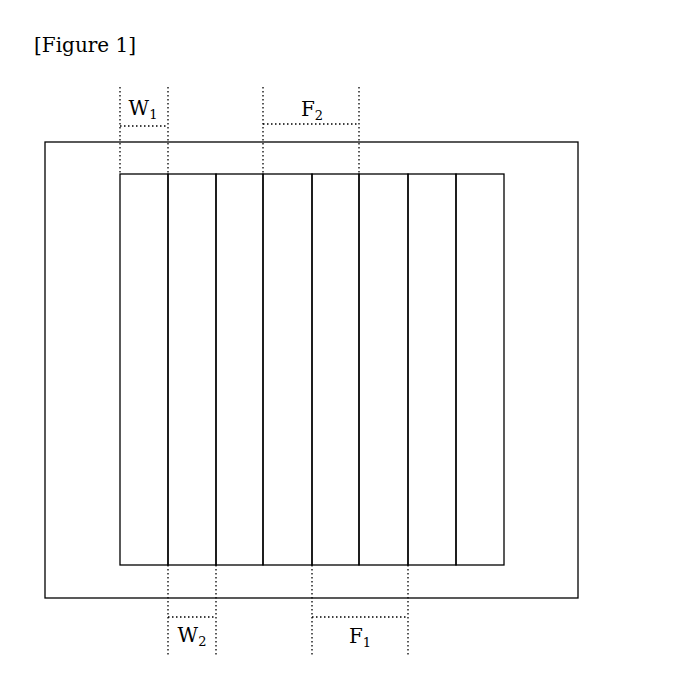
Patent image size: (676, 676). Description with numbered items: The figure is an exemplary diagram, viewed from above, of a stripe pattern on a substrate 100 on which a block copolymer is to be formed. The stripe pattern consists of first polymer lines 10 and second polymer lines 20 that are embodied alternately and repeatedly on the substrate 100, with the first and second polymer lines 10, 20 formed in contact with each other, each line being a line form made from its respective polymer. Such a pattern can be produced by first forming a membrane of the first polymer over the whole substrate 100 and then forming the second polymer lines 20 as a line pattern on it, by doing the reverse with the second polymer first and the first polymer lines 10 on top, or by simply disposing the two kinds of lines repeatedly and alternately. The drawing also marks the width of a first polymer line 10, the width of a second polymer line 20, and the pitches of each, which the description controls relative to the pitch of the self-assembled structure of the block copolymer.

The substrate 100 is at (311, 370).
The first polymer line 10 is at (288, 369).
The second polymer line 20 is at (336, 369).